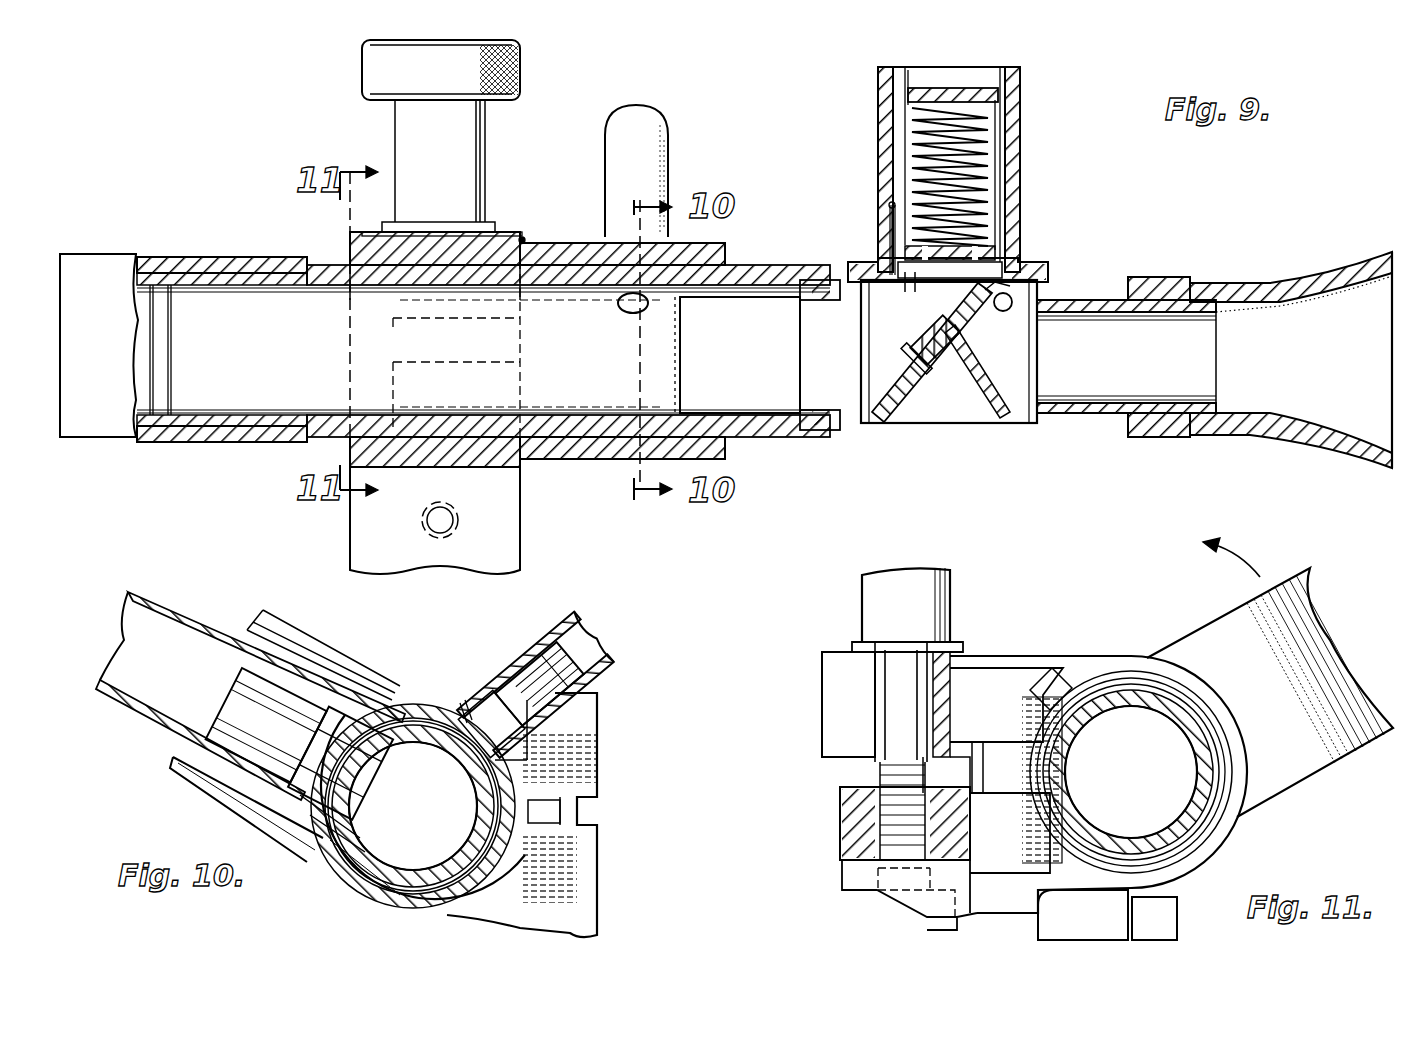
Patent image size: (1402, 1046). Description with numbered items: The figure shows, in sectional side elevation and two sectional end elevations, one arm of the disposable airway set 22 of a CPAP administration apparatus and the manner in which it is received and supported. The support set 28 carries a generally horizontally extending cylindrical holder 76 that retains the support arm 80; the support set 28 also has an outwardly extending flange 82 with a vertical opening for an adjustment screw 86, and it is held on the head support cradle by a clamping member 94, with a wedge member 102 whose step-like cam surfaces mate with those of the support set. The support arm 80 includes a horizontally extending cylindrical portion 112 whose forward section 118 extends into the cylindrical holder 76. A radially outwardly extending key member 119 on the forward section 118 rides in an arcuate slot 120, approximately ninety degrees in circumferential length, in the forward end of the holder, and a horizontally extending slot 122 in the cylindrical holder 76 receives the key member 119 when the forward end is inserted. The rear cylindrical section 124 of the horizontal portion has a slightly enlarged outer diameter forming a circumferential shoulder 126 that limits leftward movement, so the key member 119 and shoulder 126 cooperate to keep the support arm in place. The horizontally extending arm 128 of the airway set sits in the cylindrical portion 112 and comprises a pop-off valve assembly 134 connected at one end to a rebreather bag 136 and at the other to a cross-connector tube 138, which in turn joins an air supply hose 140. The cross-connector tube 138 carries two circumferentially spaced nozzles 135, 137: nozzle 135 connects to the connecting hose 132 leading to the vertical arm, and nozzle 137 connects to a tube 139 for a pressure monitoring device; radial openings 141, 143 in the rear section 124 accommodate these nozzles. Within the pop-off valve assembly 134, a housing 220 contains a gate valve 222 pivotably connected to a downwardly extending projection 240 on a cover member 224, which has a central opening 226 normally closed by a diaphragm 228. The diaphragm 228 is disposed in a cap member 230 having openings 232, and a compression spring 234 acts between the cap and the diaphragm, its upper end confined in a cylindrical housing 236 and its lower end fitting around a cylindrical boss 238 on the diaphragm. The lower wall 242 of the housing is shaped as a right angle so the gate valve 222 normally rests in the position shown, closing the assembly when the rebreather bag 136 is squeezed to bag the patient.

In FIG. 9, the disposable airway set 22 is at (962, 165).
In FIG. 9, the support set 28 is at (421, 136).
In FIG. 9, the cylindrical holder 76 is at (498, 232).
In FIG. 11, the cylindrical holder 76 is at (1222, 833).
In FIG. 9, the support arm 80 is at (708, 244).
In FIG. 10, the support arm 80 is at (193, 785).
In FIG. 11, the support arm 80 is at (1314, 768).
In FIG. 10, the outwardly extending flange 82 is at (587, 773).
In FIG. 11, the outwardly extending flange 82 is at (830, 740).
In FIG. 9, the adjustment screw 86 is at (490, 148).
In FIG. 11, the adjustment screw 86 is at (862, 637).
In FIG. 9, the clamping member 94 is at (512, 548).
In FIG. 11, the clamping member 94 is at (1160, 924).
In FIG. 11, the wedge member 102 is at (848, 848).
In FIG. 9, the horizontally extending cylindrical portion 112 is at (728, 258).
In FIG. 9, the forward section 118 is at (348, 250).
In FIG. 11, the forward section 118 is at (1113, 688).
In FIG. 11, the key member 119 is at (1042, 670).
In FIG. 9, the arcuate slot 120 is at (400, 318).
In FIG. 11, the arcuate slot 120 is at (1030, 698).
In FIG. 9, the horizontally extending slot 122 is at (512, 340).
In FIG. 11, the horizontally extending slot 122 is at (978, 765).
In FIG. 9, the rear cylindrical section 124 is at (595, 432).
In FIG. 10, the rear cylindrical section 124 is at (357, 905).
In FIG. 9, the circumferential shoulder 126 is at (524, 240).
In FIG. 9, the horizontally extending arm 128 is at (824, 446).
In FIG. 10, the connecting hose 132 is at (182, 612).
In FIG. 9, the pop-off valve assembly 134 is at (995, 169).
In FIG. 10, the nozzle 135 is at (227, 712).
In FIG. 9, the rebreather bag 136 is at (1330, 280).
In FIG. 10, the nozzle 137 is at (573, 703).
In FIG. 9, the cross-connector tube 138 is at (795, 434).
In FIG. 10, the cross-connector tube 138 is at (357, 858).
In FIG. 9, the tube 139 is at (652, 147).
In FIG. 10, the tube 139 is at (612, 658).
In FIG. 9, the air supply hose 140 is at (115, 262).
In FIG. 10, the radial opening 141 is at (310, 815).
In FIG. 10, the radial opening 143 is at (467, 703).
In FIG. 9, the housing 220 is at (1034, 290).
In FIG. 9, the gate valve 222 is at (935, 350).
In FIG. 9, the cover member 224 is at (1020, 266).
In FIG. 9, the central opening 226 is at (912, 285).
In FIG. 9, the diaphragm 228 is at (1000, 256).
In FIG. 9, the cap member 230 is at (1030, 165).
In FIG. 9, the openings 232 is at (887, 212).
In FIG. 9, the compression spring 234 is at (908, 142).
In FIG. 9, the cylindrical housing 236 is at (1000, 107).
In FIG. 9, the cylindrical boss 238 is at (990, 240).
In FIG. 9, the downwardly extending projection 240 is at (1000, 312).
In FIG. 9, the lower wall 242 is at (902, 412).